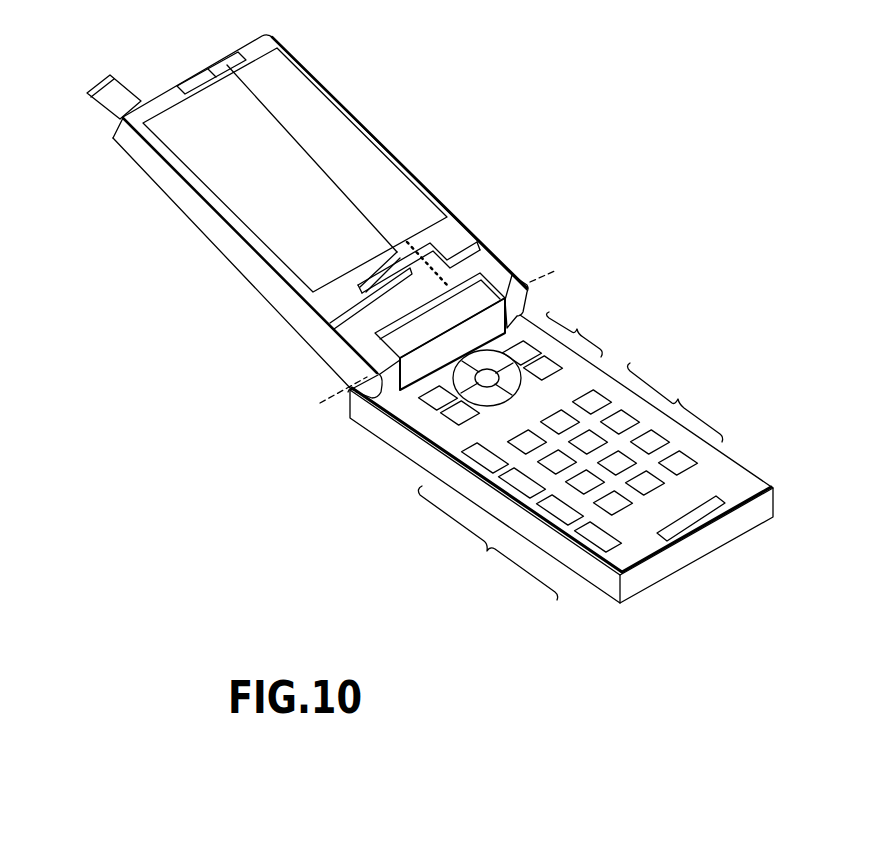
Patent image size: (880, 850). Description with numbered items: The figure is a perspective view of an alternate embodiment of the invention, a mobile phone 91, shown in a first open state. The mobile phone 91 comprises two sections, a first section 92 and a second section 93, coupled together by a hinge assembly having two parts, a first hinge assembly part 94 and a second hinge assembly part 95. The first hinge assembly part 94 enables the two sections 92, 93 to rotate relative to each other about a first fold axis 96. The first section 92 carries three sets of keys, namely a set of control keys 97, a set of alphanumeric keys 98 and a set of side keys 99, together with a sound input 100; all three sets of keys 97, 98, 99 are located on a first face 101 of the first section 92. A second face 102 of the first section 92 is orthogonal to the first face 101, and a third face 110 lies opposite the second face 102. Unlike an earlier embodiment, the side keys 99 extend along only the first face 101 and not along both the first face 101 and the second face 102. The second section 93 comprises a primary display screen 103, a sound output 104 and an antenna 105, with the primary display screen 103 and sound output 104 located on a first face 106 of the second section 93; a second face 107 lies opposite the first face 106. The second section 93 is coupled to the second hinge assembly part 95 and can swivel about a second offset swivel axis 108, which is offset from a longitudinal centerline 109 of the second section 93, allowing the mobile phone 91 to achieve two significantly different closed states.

The mobile phone 91 is at (551, 209).
The first section 92 is at (720, 530).
The second section 93 is at (168, 93).
The first hinge assembly part 94 is at (488, 297).
The second hinge assembly part 95 is at (460, 267).
The first fold axis 96 is at (543, 277).
The set of control keys 97 is at (577, 327).
The set of alphanumeric keys 98 is at (680, 397).
The set of side keys 99 is at (484, 553).
The sound input 100 is at (713, 497).
The first face 101 is at (555, 397).
The second face 102 is at (607, 585).
The primary display screen 103 is at (325, 105).
The sound output 104 is at (227, 62).
The antenna 105 is at (107, 97).
The first face 106 is at (460, 230).
The second face 107 is at (122, 197).
The second offset swivel axis 108 is at (362, 356).
The longitudinal centerline 109 is at (340, 325).
The third face 110 is at (744, 443).